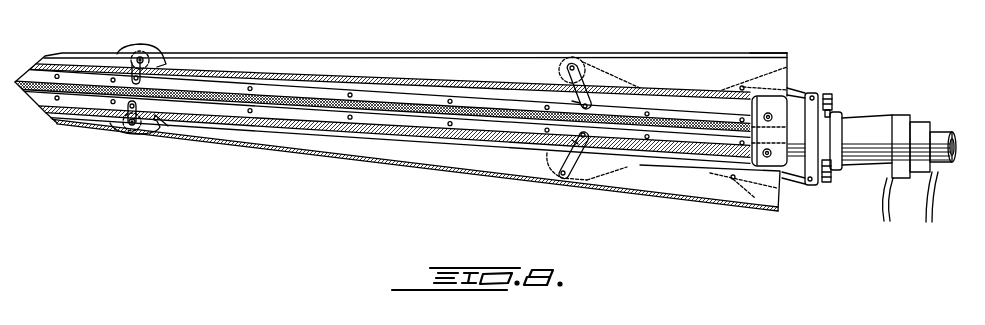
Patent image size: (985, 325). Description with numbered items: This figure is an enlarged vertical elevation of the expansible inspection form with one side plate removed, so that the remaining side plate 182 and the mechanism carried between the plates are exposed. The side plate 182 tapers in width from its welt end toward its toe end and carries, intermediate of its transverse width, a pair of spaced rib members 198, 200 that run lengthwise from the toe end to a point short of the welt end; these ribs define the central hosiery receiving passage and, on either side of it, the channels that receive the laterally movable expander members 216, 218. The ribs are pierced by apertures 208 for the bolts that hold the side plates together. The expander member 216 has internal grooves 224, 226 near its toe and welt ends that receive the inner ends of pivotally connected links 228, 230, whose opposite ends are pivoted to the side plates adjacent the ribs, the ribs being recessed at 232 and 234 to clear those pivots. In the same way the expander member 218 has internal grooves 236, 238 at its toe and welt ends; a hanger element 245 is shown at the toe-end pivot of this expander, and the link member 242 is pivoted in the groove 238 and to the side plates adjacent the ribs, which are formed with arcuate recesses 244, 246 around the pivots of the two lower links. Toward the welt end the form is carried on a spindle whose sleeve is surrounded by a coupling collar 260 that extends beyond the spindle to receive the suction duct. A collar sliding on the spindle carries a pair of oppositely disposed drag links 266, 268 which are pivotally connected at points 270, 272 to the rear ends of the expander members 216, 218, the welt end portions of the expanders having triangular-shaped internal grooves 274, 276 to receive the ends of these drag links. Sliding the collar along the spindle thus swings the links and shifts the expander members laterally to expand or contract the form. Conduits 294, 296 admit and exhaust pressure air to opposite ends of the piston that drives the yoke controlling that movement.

The side plate 182 is at (447, 87).
The rib member 198 is at (488, 107).
The rib member 200 is at (501, 141).
The apertures 208 is at (364, 70).
The expander member 216 is at (470, 23).
The expander member 218 is at (402, 171).
The internal groove 224 is at (156, 50).
The internal groove 226 is at (622, 45).
The link 228 is at (148, 63).
The link 230 is at (590, 104).
The arcuate recess 232 is at (121, 56).
The recess 234 is at (575, 102).
The internal groove 236 is at (133, 140).
The internal groove 238 is at (591, 182).
The link member 242 is at (582, 152).
The arcuate recess 244 is at (118, 127).
The lower hanger bar 245 is at (161, 127).
The arcuate recess 246 is at (572, 140).
The coupling collar 260 is at (862, 115).
The drag link 266 is at (803, 91).
The drag link 268 is at (785, 183).
The pivotal connection point 270 is at (742, 85).
The pivotal connection point 272 is at (736, 199).
The triangular-shaped internal groove 274 is at (811, 41).
The triangular-shaped internal groove 276 is at (742, 219).
The conduit 294 is at (880, 208).
The conduit 296 is at (930, 212).